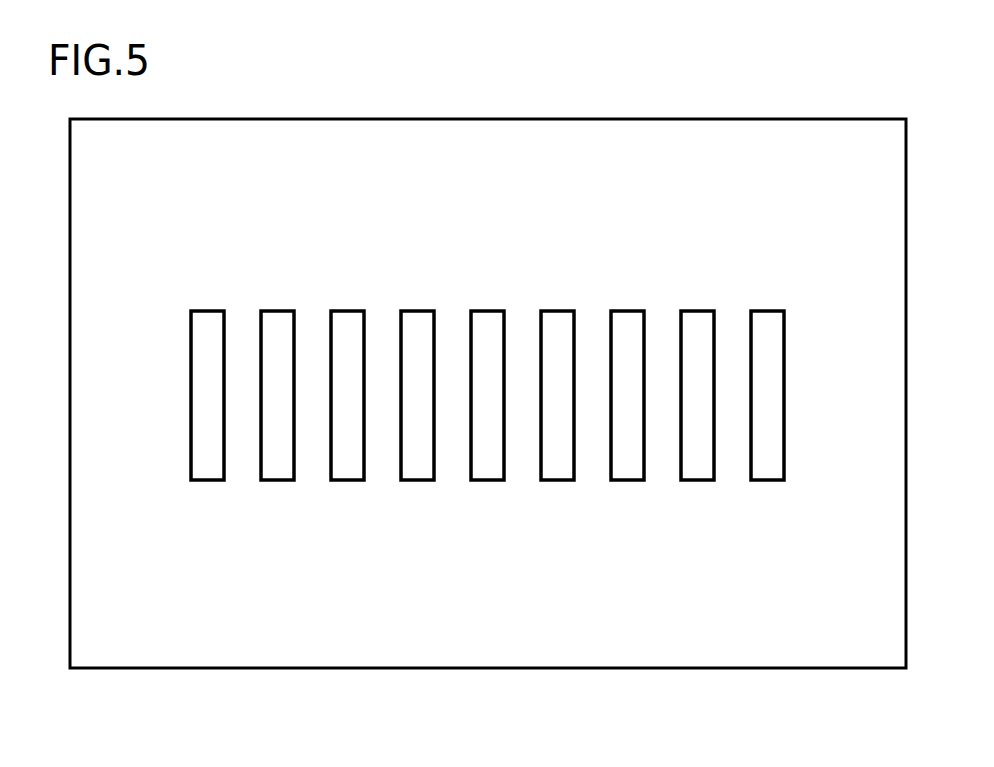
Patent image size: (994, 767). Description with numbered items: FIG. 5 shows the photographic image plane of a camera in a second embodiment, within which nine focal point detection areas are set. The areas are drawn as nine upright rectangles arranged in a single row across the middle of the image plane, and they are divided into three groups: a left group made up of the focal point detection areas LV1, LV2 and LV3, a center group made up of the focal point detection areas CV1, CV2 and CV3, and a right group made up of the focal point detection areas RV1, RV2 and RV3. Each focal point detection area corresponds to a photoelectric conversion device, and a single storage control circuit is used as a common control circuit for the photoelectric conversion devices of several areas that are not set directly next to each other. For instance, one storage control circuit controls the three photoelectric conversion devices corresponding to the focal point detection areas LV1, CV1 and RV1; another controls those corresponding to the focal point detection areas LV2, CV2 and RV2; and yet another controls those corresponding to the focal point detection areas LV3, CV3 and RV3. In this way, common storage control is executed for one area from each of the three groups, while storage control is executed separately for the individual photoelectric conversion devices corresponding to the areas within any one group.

The focal point detection area LV1 is at (207, 480).
The focal point detection area LV2 is at (277, 480).
The focal point detection area LV3 is at (347, 480).
The focal point detection area CV1 is at (417, 480).
The focal point detection area CV2 is at (487, 480).
The focal point detection area CV3 is at (557, 480).
The focal point detection area RV1 is at (627, 480).
The focal point detection area RV2 is at (697, 480).
The focal point detection area RV3 is at (767, 480).